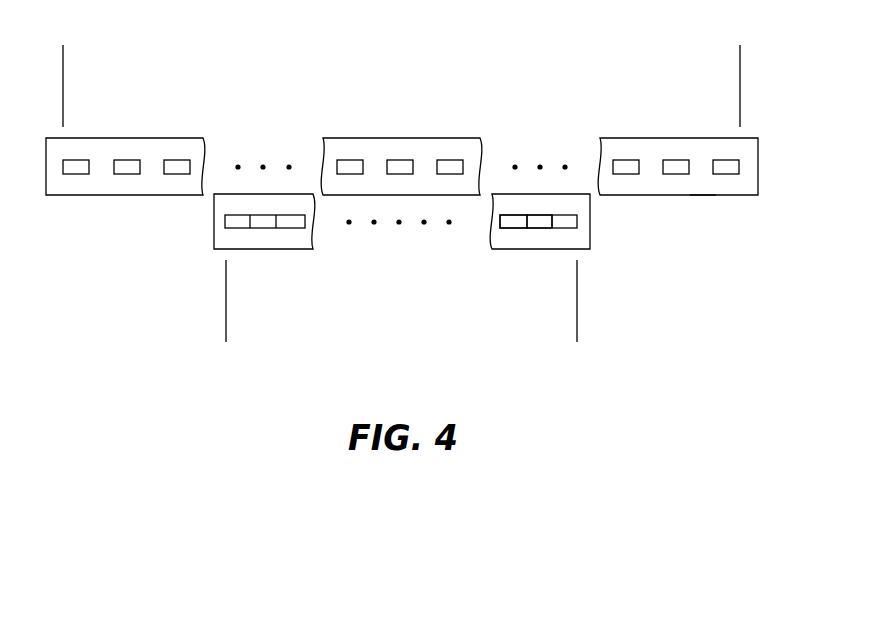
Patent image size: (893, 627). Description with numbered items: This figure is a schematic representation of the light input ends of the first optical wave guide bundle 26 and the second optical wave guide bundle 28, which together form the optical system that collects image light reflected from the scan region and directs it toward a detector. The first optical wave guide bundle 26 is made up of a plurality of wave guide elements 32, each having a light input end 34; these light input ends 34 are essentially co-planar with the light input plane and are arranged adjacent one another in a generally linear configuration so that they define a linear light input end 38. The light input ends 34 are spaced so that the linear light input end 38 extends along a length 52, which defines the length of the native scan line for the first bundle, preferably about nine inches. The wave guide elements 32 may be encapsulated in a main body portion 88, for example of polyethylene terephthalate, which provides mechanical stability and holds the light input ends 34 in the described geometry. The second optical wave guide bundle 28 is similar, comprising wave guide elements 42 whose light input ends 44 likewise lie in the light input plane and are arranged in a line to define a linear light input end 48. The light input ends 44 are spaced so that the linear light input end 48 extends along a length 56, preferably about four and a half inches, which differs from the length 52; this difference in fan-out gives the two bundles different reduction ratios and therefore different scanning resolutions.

The first optical wave guide bundle 26 is at (441, 137).
The second optical wave guide bundle 28 is at (267, 253).
The wave guide element 32 is at (107, 194).
The light input end 34 is at (111, 172).
The linear light input end 38 is at (758, 166).
The wave guide element 42 is at (517, 237).
The light input end 44 is at (540, 232).
The linear light input end 48 is at (556, 248).
The length 52 is at (740, 61).
The length 56 is at (577, 327).
The main body portion 88 is at (702, 196).